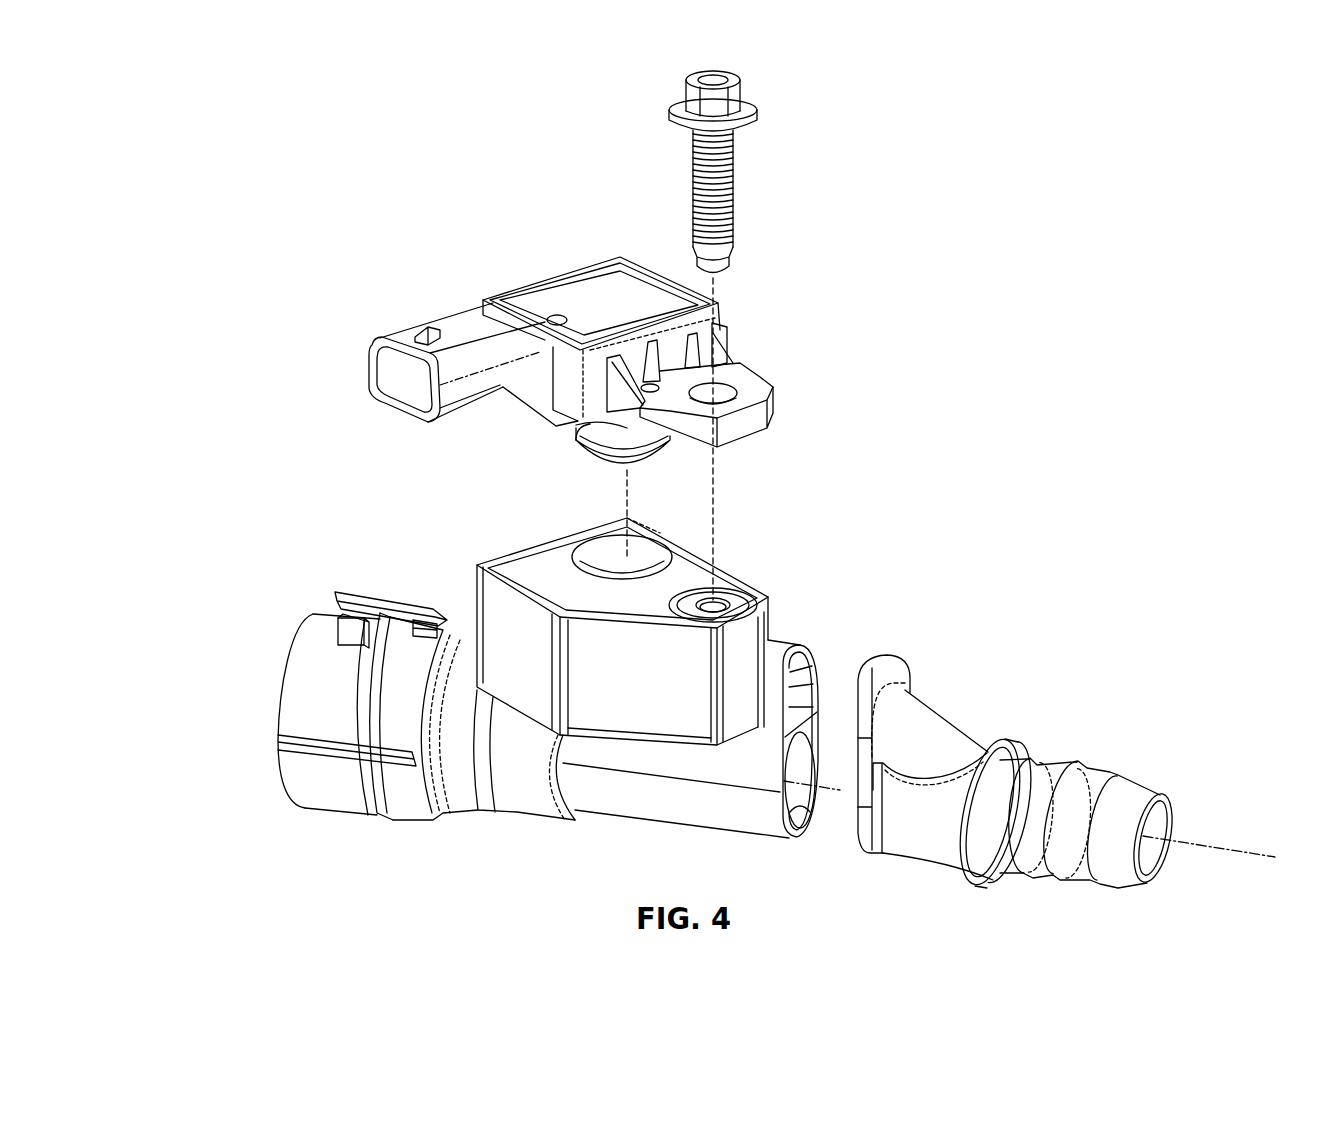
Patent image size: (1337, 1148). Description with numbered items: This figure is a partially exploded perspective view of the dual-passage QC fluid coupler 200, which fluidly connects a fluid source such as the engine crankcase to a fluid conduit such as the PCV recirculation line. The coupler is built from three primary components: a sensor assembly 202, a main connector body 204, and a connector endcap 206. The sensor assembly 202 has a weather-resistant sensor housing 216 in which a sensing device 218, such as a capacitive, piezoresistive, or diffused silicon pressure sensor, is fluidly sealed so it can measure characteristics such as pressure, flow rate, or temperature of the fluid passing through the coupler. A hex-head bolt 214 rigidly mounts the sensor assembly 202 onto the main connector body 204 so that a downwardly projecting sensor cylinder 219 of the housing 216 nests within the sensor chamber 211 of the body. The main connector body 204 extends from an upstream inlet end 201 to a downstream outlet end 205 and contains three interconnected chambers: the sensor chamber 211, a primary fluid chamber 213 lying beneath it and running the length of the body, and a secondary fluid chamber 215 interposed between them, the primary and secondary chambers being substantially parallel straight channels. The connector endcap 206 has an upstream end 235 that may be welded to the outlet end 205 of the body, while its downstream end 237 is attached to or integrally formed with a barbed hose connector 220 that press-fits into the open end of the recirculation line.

The QC fluid coupler 200 is at (1128, 505).
The inlet end 201 is at (278, 620).
The sensor assembly 202 is at (525, 246).
The main connector body 204 is at (461, 598).
The outlet end 205 is at (856, 653).
The connector endcap 206 is at (1071, 706).
The sensor chamber 211 is at (600, 560).
The primary fluid chamber 213 is at (786, 826).
The hex-head bolt 214 is at (737, 176).
The secondary fluid chamber 215 is at (822, 668).
The sensor housing 216 is at (481, 318).
The sensing device 218 is at (612, 282).
The sensor cylinder 219 is at (578, 450).
The barbed hose connector 220 is at (1104, 757).
The upstream end 235 is at (840, 843).
The downstream end 237 is at (1196, 814).